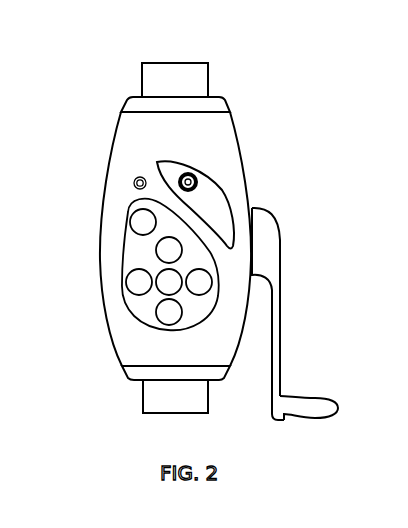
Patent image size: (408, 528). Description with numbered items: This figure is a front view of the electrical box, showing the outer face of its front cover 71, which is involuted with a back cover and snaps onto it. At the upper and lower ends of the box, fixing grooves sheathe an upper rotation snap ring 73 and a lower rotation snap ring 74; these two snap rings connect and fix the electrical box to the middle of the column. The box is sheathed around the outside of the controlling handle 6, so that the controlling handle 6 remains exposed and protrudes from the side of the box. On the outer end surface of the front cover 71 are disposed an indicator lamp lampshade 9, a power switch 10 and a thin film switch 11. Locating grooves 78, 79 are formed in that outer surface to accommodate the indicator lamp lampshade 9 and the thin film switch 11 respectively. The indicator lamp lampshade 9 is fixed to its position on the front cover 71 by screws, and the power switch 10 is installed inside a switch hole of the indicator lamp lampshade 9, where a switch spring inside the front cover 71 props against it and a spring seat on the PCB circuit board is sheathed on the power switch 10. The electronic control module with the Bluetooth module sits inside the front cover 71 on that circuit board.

The controlling handle 6 is at (278, 318).
The indicator lamp lampshade 9 is at (215, 202).
The power switch 10 is at (197, 175).
The thin film switch 11 is at (127, 252).
The front cover 71 is at (228, 160).
The upper rotation snap ring 73 is at (198, 104).
The lower rotation snap ring 74 is at (136, 373).
The locating groove 78 is at (157, 162).
The locating groove 79 is at (133, 181).